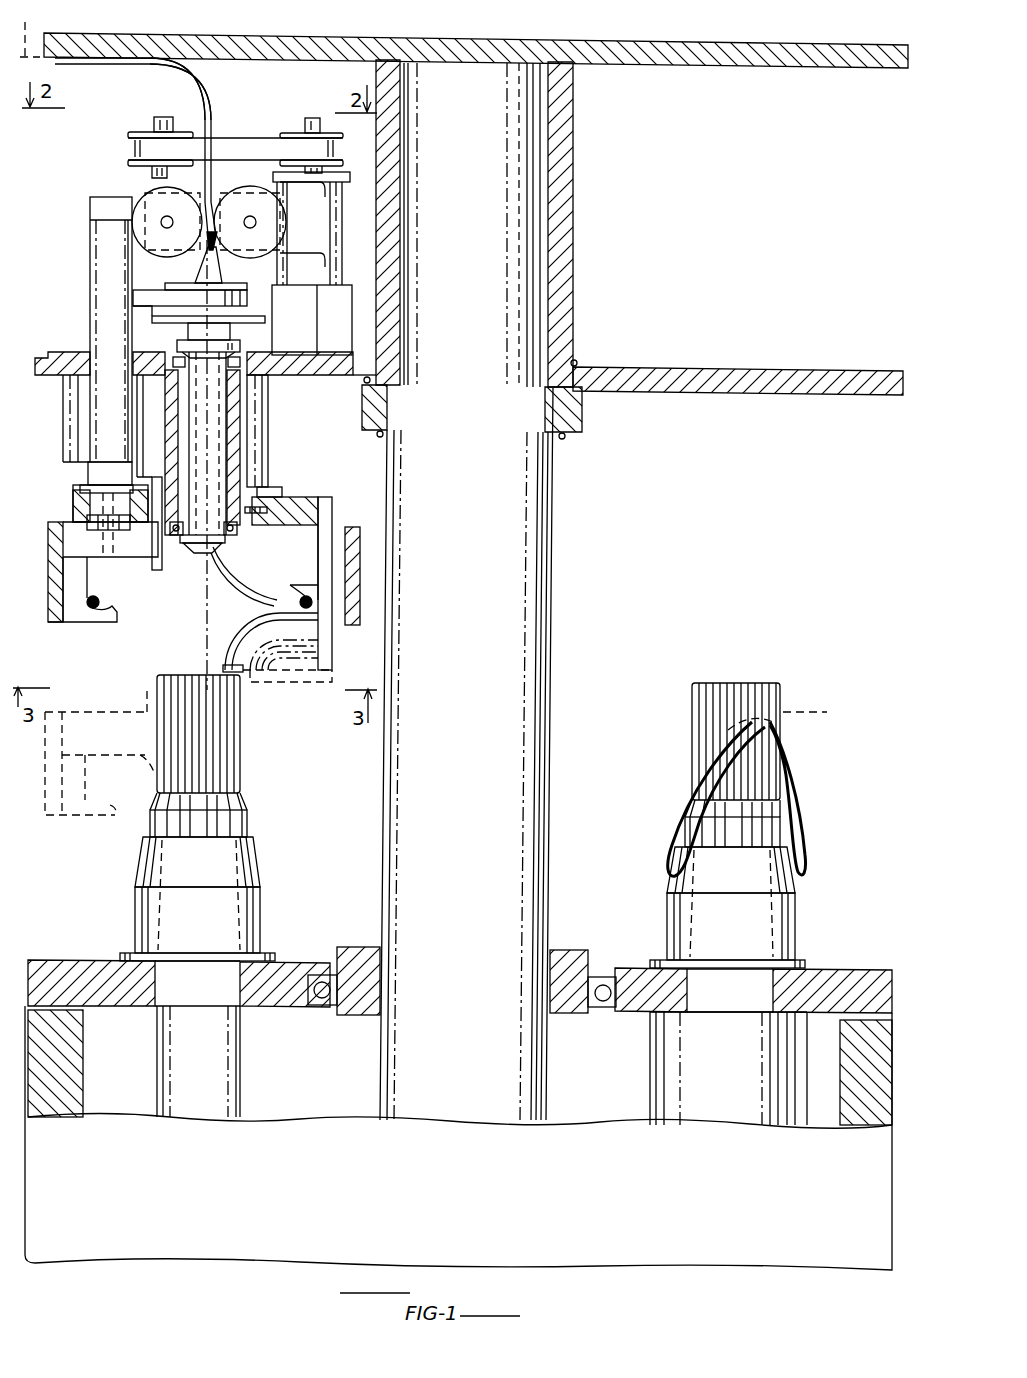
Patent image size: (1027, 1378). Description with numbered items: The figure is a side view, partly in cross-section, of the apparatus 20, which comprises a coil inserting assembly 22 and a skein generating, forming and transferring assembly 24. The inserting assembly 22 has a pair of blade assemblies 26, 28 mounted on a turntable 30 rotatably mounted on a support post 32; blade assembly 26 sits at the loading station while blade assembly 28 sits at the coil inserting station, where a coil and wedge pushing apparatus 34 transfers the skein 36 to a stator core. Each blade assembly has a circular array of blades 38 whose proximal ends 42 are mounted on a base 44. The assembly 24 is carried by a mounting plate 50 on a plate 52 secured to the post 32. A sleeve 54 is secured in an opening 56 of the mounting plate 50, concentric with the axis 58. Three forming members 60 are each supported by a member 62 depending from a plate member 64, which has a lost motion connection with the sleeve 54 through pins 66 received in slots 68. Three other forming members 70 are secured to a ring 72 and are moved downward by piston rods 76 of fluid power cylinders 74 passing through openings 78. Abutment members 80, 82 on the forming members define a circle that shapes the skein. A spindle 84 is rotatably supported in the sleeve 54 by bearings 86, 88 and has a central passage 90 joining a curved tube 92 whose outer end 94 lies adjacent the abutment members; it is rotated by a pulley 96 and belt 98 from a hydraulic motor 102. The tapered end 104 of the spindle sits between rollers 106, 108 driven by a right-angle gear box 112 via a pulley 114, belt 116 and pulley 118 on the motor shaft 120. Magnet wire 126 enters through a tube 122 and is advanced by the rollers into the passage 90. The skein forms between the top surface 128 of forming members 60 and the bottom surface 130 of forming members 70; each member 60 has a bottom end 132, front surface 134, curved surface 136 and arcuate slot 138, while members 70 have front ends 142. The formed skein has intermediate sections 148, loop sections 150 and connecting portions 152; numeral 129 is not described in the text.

The apparatus 20 is at (458, 1191).
The coil inserting assembly 22 is at (739, 807).
The skein generating, forming and transferring assembly 24 is at (202, 128).
The blade assembly 26 is at (211, 818).
The blade assembly 28 is at (673, 690).
The turntable 30 is at (835, 970).
The support post 32 is at (479, 471).
The coil and wedge pushing apparatus 34 is at (739, 1062).
The skein 36 is at (100, 600).
The blades 38 is at (243, 725).
The proximal ends 42 is at (245, 827).
The base 44 is at (208, 927).
The mounting plate 50 is at (327, 377).
The plate 52 is at (728, 395).
The sleeve 54 is at (247, 432).
The opening 56 is at (278, 378).
The axis 58 is at (203, 587).
The forming members 60 is at (312, 644).
The member 62 is at (325, 540).
The plate member 64 is at (305, 503).
The pins 66 is at (268, 522).
The slots 68 is at (270, 526).
The forming members 70 is at (150, 554).
The ring 72 is at (52, 530).
The fluid power cylinders 74 is at (115, 265).
The piston rods 76 is at (88, 485).
The openings 78 is at (88, 512).
The abutment member 80 is at (305, 590).
The abutment member 82 is at (88, 618).
The spindle 84 is at (198, 410).
The bearing 86 is at (238, 350).
The bearing 88 is at (170, 553).
The central passage 90 is at (205, 438).
The curved tube 92 is at (245, 588).
The outer end 94 is at (277, 572).
The pulley 96 is at (228, 283).
The belt 98 is at (227, 297).
The hydraulic motor 102 is at (78, 405).
The tapered end 104 is at (197, 265).
The roller 106 is at (182, 217).
The roller 108 is at (268, 217).
The right-angle gear box 112 is at (334, 226).
The pulley 114 is at (285, 130).
The belt 116 is at (240, 143).
The pulley 118 is at (140, 130).
The shaft 120 is at (163, 117).
The tube 122 is at (207, 78).
The magnet wire 126 is at (413, 562).
The top surface 128 is at (330, 622).
The tube end 129 is at (219, 197).
The bottom surface 130 is at (95, 563).
The bottom end 132 is at (262, 683).
The front surface 134 is at (230, 653).
The curved surface 136 is at (250, 623).
The arcuate slot 138 is at (240, 667).
The front ends 142 is at (157, 558).
The intermediate sections 148 is at (799, 714).
The loop sections 150 is at (668, 830).
The connecting portions 152 is at (777, 733).